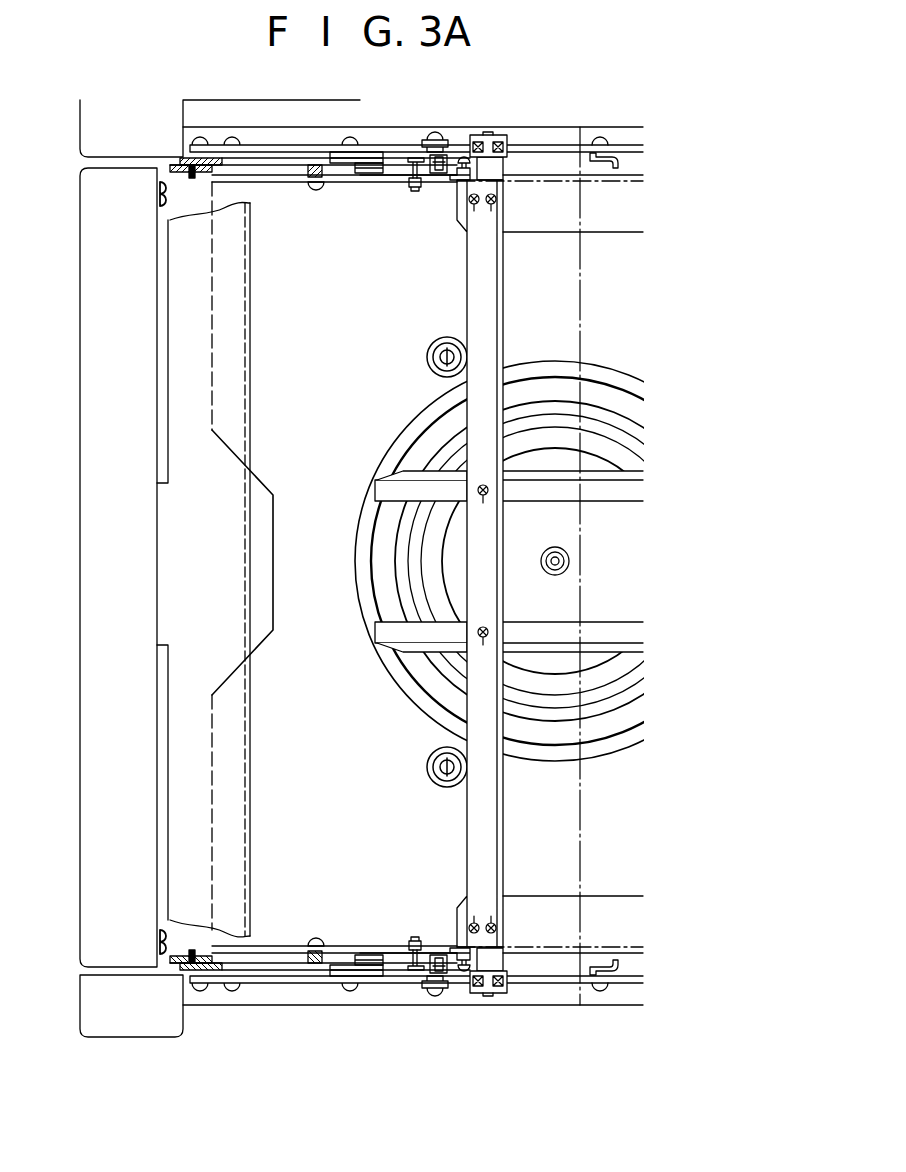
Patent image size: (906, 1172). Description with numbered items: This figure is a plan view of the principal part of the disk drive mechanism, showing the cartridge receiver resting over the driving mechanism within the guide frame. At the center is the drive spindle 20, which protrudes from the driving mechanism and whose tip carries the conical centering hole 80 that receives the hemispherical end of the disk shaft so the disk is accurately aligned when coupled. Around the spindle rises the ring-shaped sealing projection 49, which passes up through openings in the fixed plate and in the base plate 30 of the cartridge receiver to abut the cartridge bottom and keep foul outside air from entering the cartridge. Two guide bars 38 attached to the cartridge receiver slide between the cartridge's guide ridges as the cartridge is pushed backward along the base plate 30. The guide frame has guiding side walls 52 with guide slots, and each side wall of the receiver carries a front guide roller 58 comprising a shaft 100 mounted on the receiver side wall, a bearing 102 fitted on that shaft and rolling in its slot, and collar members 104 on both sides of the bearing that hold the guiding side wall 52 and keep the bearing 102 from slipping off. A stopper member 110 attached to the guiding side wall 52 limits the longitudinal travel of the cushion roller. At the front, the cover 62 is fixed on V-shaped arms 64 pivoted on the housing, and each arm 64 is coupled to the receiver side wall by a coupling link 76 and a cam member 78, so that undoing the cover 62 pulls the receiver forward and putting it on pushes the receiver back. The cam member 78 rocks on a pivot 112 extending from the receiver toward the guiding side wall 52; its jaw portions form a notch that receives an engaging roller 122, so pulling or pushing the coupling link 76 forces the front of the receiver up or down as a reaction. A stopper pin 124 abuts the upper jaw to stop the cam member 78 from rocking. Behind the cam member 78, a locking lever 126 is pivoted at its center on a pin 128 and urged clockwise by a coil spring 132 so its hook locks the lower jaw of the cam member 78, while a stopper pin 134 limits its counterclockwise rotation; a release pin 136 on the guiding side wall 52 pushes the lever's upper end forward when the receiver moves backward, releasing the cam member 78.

The drive spindle 20 is at (555, 547).
The base plate 30 is at (272, 584).
The guide bars 38 is at (400, 473).
The ring-shaped sealing projection 49 is at (540, 742).
The guiding side walls 52 is at (623, 142).
The front guide roller 58 is at (512, 138).
The cover 62 is at (80, 470).
The V-shaped arms 64 is at (260, 172).
The coupling link 76 is at (255, 156).
The cam member 78 is at (372, 172).
The conical centering hole 80 is at (549, 561).
The shaft 100 is at (503, 168).
The bearing 102 is at (500, 133).
The collar members 104 is at (468, 142).
The stopper member 110 is at (623, 166).
The pivot 112 is at (344, 166).
The engaging roller 122 is at (333, 160).
The stopper pin 124 is at (312, 170).
The locking lever 126 is at (408, 156).
The pin 128 is at (443, 177).
The coil spring 132 is at (437, 172).
The stopper pin 134 is at (413, 170).
The release pin 136 is at (440, 150).